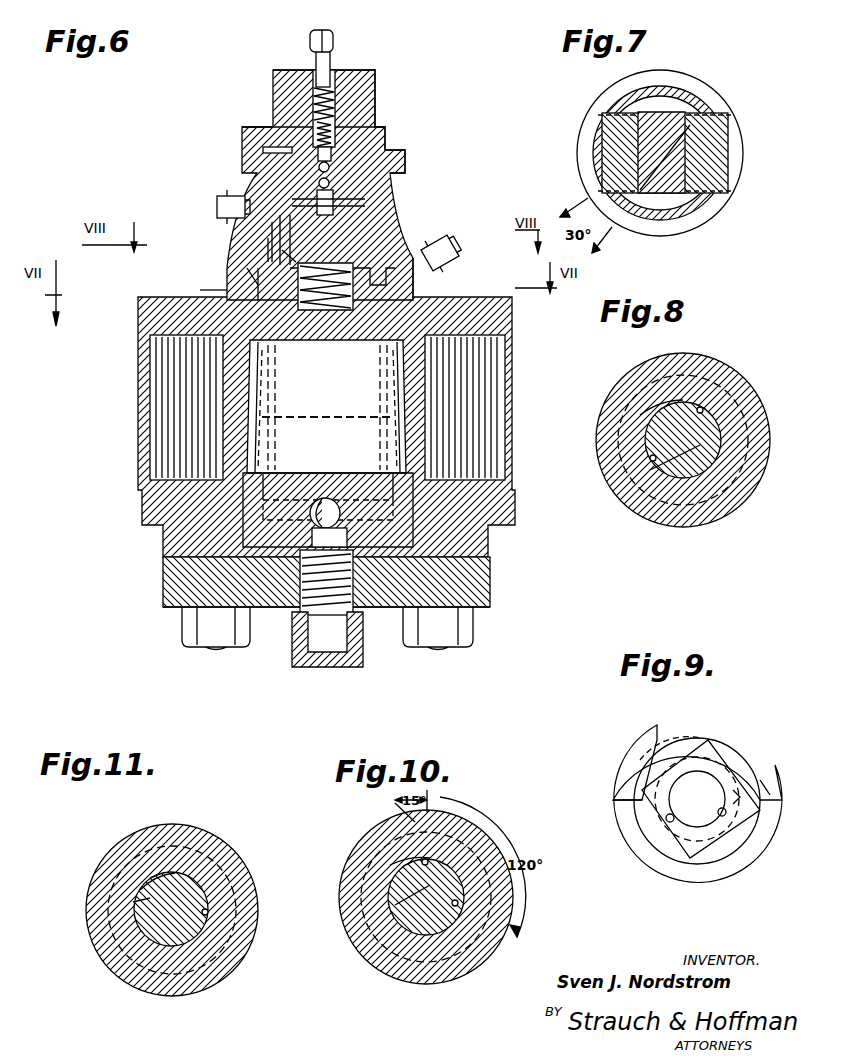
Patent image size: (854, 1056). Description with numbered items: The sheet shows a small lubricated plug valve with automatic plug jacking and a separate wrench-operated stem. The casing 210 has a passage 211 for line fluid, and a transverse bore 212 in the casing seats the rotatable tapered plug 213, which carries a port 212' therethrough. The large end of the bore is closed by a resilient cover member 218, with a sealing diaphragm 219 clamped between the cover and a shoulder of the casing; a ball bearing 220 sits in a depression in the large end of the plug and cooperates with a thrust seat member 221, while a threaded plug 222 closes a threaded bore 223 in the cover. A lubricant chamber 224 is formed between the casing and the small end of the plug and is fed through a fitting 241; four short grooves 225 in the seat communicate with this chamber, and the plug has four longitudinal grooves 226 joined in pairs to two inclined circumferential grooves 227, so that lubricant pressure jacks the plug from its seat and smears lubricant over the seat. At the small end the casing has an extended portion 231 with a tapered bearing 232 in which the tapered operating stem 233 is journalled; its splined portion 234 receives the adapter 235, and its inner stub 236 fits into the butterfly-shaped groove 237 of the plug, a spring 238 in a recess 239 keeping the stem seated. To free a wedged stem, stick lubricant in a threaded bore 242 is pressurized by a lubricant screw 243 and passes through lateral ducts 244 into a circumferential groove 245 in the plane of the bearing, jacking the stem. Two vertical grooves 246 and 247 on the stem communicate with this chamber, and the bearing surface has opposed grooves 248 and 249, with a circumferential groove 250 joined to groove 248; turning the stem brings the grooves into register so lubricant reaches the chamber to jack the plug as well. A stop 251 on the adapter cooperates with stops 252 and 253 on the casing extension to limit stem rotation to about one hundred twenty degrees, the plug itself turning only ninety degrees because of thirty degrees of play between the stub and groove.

In FIG. 6, the casing 210 is at (512, 314).
In FIG. 8, the casing 210 is at (727, 503).
In FIG. 10, the casing 210 is at (397, 970).
In FIG. 11, the casing 210 is at (167, 993).
In FIG. 6, the passage 211 is at (252, 395).
In FIG. 6, the transverse bore 212 is at (328, 432).
In FIG. 7, the transverse bore 212 is at (624, 153).
In FIG. 6, the port 212' is at (327, 394).
In FIG. 6, the tapered plug 213 is at (390, 395).
In FIG. 7, the tapered plug 213 is at (717, 208).
In FIG. 8, the tapered plug 213 is at (700, 365).
In FIG. 10, the tapered plug 213 is at (497, 960).
In FIG. 11, the tapered plug 213 is at (227, 953).
In FIG. 6, the cover member 218 is at (490, 603).
In FIG. 6, the sealing diaphragm 219 is at (488, 583).
In FIG. 6, the ball bearing 220 is at (323, 497).
In FIG. 6, the thrust seat member 221 is at (329, 538).
In FIG. 6, the threaded plug 222 is at (323, 637).
In FIG. 6, the threaded bore 223 is at (373, 600).
In FIG. 6, the lubricant chamber 224 is at (220, 290).
In FIG. 6, the short grooves 225 is at (285, 410).
In FIG. 6, the longitudinal grooves 226 is at (327, 420).
In FIG. 6, the inclined circumferential grooves 227 is at (340, 498).
In FIG. 6, the extended portion 231 is at (397, 212).
In FIG. 6, the tapered bearing 232 is at (407, 163).
In FIG. 6, the operating stem 233 is at (257, 180).
In FIG. 9, the operating stem 233 is at (713, 777).
In FIG. 6, the splined portion 234 is at (377, 109).
In FIG. 9, the splined portion 234 is at (717, 840).
In FIG. 6, the adapter 235 is at (370, 83).
In FIG. 9, the adapter 235 is at (758, 823).
In FIG. 6, the stub 236 is at (227, 275).
In FIG. 7, the stub 236 is at (690, 133).
In FIG. 6, the groove 237 is at (403, 278).
In FIG. 7, the groove 237 is at (700, 130).
In FIG. 6, the spring 238 is at (360, 408).
In FIG. 6, the recess 239 is at (282, 258).
In FIG. 6, the fitting 241 is at (450, 262).
In FIG. 6, the threaded bore 242 is at (337, 132).
In FIG. 6, the lubricant screw 243 is at (327, 60).
In FIG. 6, the lateral ducts 244 is at (350, 205).
In FIG. 6, the circumferential groove 245 is at (367, 220).
In FIG. 6, the vertical groove 246 is at (240, 230).
In FIG. 8, the vertical groove 246 is at (660, 430).
In FIG. 9, the vertical groove 246 is at (697, 765).
In FIG. 10, the vertical groove 246 is at (443, 913).
In FIG. 11, the vertical groove 246 is at (190, 920).
In FIG. 8, the vertical groove 247 is at (703, 443).
In FIG. 9, the vertical groove 247 is at (668, 818).
In FIG. 10, the vertical groove 247 is at (385, 908).
In FIG. 11, the vertical groove 247 is at (157, 870).
In FIG. 6, the groove 248 is at (227, 265).
In FIG. 8, the groove 248 is at (653, 450).
In FIG. 10, the groove 248 is at (387, 883).
In FIG. 11, the groove 248 is at (133, 902).
In FIG. 6, the groove 249 is at (455, 242).
In FIG. 8, the groove 249 is at (703, 447).
In FIG. 9, the groove 249 is at (747, 782).
In FIG. 10, the groove 249 is at (447, 943).
In FIG. 11, the groove 249 is at (213, 907).
In FIG. 6, the circumferential groove 250 is at (232, 240).
In FIG. 8, the circumferential groove 250 is at (647, 417).
In FIG. 10, the circumferential groove 250 is at (388, 858).
In FIG. 11, the circumferential groove 250 is at (133, 885).
In FIG. 6, the stop 251 is at (262, 157).
In FIG. 9, the stop 251 is at (643, 765).
In FIG. 9, the stop 252 is at (627, 800).
In FIG. 9, the stop 253 is at (763, 812).